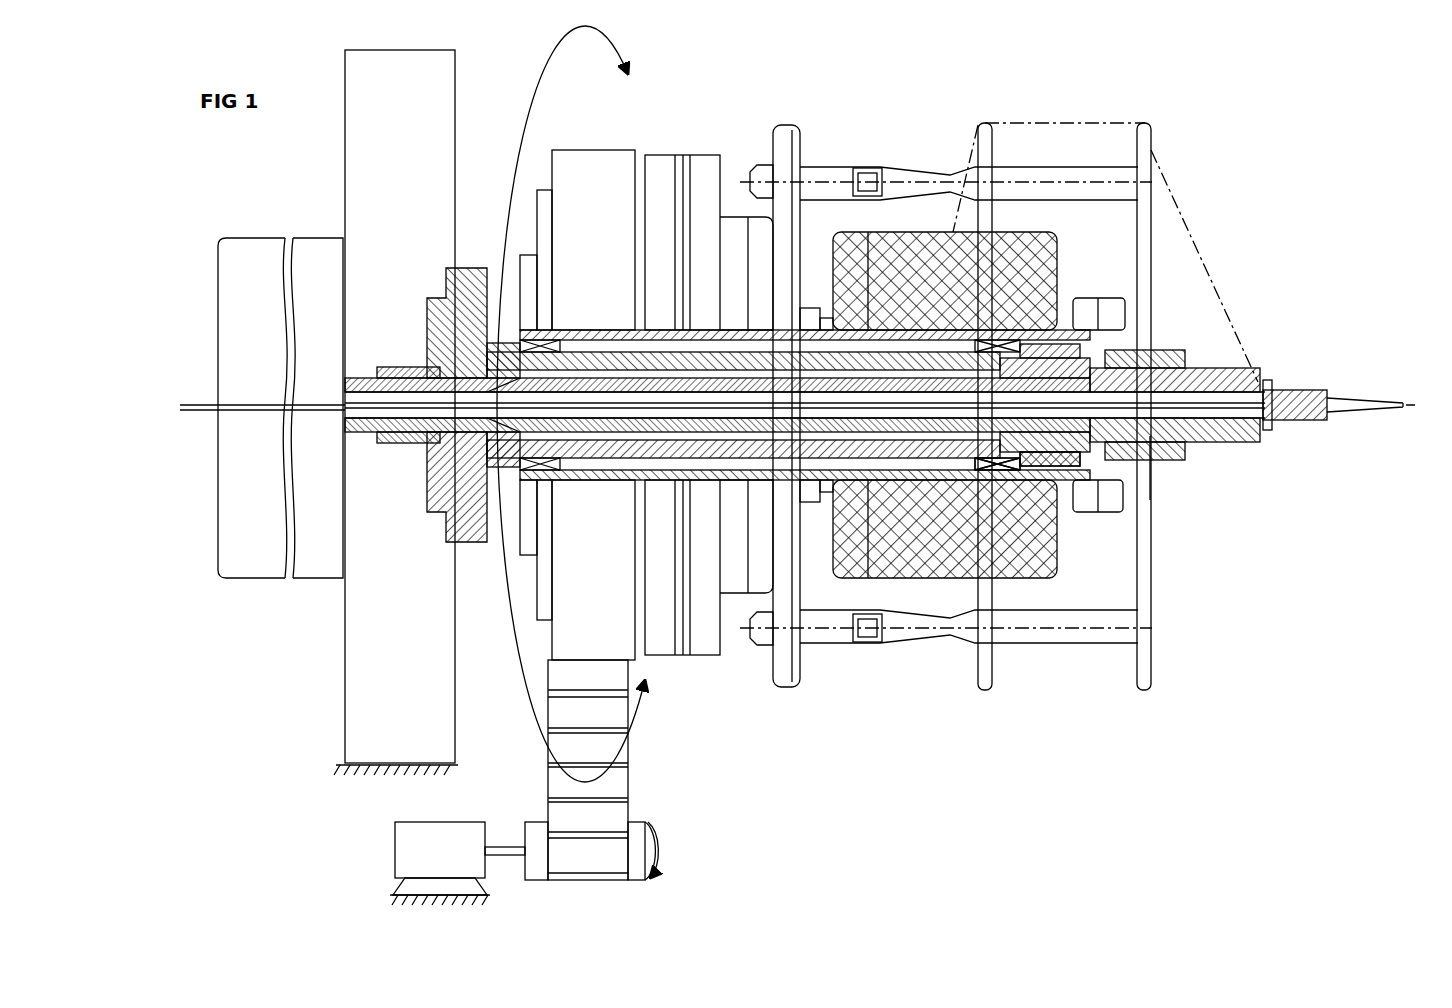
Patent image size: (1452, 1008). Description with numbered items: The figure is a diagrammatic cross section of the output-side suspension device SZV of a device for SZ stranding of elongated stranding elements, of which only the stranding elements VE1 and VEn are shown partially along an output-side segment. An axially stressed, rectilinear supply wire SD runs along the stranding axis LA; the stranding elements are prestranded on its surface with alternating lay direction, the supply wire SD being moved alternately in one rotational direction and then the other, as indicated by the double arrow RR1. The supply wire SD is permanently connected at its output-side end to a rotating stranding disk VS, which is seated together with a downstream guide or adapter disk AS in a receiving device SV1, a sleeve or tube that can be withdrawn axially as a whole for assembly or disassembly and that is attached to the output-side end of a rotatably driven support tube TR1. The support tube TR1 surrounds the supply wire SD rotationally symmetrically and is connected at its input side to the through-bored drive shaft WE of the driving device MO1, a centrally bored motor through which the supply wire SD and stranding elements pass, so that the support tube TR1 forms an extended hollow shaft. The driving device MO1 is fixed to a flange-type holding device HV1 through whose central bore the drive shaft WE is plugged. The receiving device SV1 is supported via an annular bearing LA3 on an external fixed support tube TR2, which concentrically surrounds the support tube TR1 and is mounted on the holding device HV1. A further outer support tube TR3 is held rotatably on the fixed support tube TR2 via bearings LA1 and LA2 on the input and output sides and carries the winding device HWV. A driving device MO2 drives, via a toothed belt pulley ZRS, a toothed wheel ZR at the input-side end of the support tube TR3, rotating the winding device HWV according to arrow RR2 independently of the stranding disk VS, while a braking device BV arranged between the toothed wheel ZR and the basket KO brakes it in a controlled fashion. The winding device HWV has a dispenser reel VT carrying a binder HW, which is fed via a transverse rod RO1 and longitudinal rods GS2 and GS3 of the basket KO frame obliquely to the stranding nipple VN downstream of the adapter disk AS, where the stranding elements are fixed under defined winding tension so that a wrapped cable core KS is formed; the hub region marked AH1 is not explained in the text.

The suspension device SZV is at (242, 770).
The holding device HV1 is at (356, 652).
The driving device MO1 is at (318, 232).
The supply wire SD is at (212, 405).
The stranding axis LA is at (205, 397).
The drive shaft WE is at (355, 430).
The bearing LA1 is at (558, 330).
The bearing LA2 is at (975, 352).
The bearing LA3 is at (1082, 340).
The support tube TR1 is at (995, 470).
The support tube TR2 is at (1096, 490).
The support tube TR3 is at (1010, 460).
The stranding disk VS is at (1150, 400).
The adapter disk AS is at (1243, 382).
The drive hub AH1 is at (1205, 438).
The receiving device SV1 is at (1182, 475).
The stranding nipple VN is at (1296, 390).
The cable core KS is at (1346, 400).
The toothed wheel ZR is at (572, 632).
The braking device BV is at (685, 145).
The basket KO is at (790, 124).
The transverse rod RO1 is at (826, 176).
The dispenser reel VT is at (905, 242).
The stranding element VEn is at (868, 395).
The stranding element VE1 is at (870, 418).
The longitudinal rod GS2 is at (985, 145).
The longitudinal rod GS3 is at (1145, 152).
The winding device HWV is at (1060, 126).
The binder HW is at (1206, 264).
The double arrow RR1 is at (612, 46).
The toothed belt pulley ZRS is at (615, 782).
The arrow RR2 is at (658, 828).
The driving device MO2 is at (415, 850).